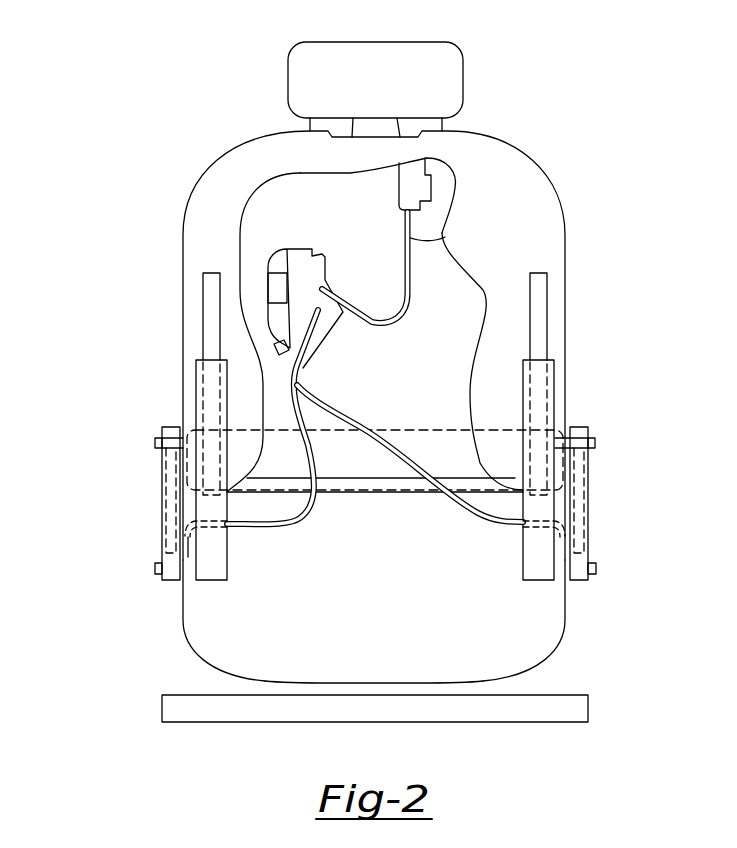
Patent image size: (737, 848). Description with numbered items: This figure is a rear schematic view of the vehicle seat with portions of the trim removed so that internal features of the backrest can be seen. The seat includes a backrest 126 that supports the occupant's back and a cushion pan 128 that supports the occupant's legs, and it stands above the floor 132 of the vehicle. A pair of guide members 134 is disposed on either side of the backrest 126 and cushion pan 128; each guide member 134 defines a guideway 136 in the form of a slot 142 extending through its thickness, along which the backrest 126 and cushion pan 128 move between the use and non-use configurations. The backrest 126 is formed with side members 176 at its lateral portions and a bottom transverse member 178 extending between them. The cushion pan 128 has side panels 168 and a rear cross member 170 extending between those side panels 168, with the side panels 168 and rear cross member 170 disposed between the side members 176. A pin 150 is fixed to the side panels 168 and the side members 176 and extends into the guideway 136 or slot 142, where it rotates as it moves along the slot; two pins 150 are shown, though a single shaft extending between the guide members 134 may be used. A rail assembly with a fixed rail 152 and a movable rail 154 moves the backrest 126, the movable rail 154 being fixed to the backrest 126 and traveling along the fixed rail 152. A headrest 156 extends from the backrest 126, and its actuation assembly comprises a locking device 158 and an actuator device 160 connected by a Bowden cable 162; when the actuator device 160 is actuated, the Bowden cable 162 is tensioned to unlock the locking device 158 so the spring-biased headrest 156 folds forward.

The backrest 126 is at (228, 173).
The cushion pan 128 is at (393, 643).
The floor 132 is at (563, 702).
The guide member 134 is at (376, 475).
The guideway 136 is at (376, 500).
The slot 142 is at (167, 490).
The pin 150 is at (157, 442).
The fixed rail 152 is at (212, 582).
The movable rail 154 is at (200, 298).
The headrest 156 is at (317, 80).
The locking device 158 is at (418, 182).
The actuator device 160 is at (280, 259).
The Bowden cable 162 is at (445, 237).
The side panels 168 is at (185, 613).
The rear cross member 170 is at (405, 427).
The side members 176 is at (194, 336).
The bottom transverse member 178 is at (378, 493).